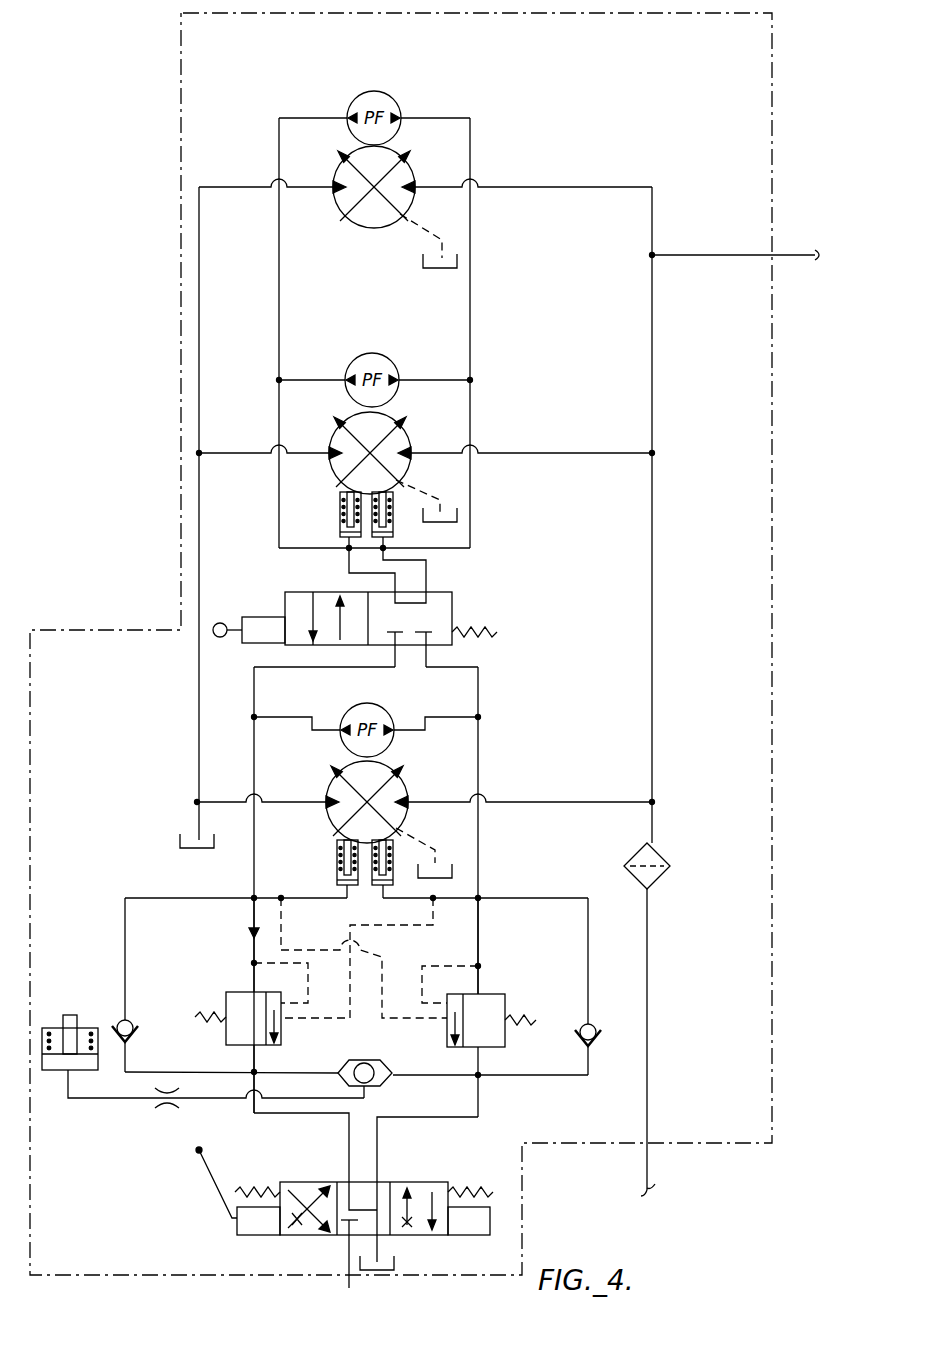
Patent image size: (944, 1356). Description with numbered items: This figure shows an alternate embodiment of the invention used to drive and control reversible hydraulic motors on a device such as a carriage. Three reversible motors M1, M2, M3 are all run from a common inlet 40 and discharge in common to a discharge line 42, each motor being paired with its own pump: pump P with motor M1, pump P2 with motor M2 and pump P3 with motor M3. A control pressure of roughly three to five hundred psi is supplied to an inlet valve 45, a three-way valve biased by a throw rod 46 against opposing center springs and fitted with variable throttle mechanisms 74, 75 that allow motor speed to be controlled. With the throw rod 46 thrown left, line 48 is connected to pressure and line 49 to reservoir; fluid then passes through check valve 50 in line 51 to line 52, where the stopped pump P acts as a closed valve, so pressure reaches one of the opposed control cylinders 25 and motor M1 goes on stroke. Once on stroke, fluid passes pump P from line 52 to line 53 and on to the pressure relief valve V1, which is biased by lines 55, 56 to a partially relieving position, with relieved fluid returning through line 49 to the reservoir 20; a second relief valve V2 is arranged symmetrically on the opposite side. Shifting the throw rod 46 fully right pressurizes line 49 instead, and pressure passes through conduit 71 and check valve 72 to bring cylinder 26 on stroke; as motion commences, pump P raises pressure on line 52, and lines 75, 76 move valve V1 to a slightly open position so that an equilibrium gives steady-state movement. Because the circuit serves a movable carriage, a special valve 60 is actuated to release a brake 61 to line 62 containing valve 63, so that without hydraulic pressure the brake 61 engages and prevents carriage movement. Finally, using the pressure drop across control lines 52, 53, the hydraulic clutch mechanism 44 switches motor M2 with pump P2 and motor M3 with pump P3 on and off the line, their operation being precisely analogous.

The reservoir 20 is at (395, 1265).
The control cylinder 25 is at (337, 868).
The cylinder 26 is at (395, 862).
The common inlet 40 is at (647, 992).
The discharge line 42 is at (197, 716).
The hydraulic clutch mechanism 44 is at (452, 600).
The inlet valve 45 is at (349, 1258).
The throw rod 46 is at (210, 1178).
The line 48 is at (349, 1147).
The line 49 is at (377, 1147).
The check valve 50 is at (130, 1022).
The line 51 is at (150, 1062).
The line 52 is at (254, 762).
The line 53 is at (478, 762).
The line 55 is at (385, 955).
The line 56 is at (422, 985).
The special valve 60 is at (385, 1084).
The brake 61 is at (44, 1072).
The line 62 is at (117, 1107).
The valve 63 is at (168, 1104).
The conduit 71 is at (515, 1064).
The check valve 72 is at (594, 1026).
The variable throttle mechanism 74 is at (293, 1234).
The variable throttle mechanism 75 is at (350, 925).
The line 76 is at (308, 985).
The pump P is at (383, 708).
The pump P2 is at (386, 358).
The pump P3 is at (374, 92).
The reversible motor M1 is at (400, 790).
The reversible motor M2 is at (402, 438).
The reversible motor M3 is at (404, 170).
The pressure relief valve V1 is at (482, 992).
The relief valve V2 is at (240, 990).